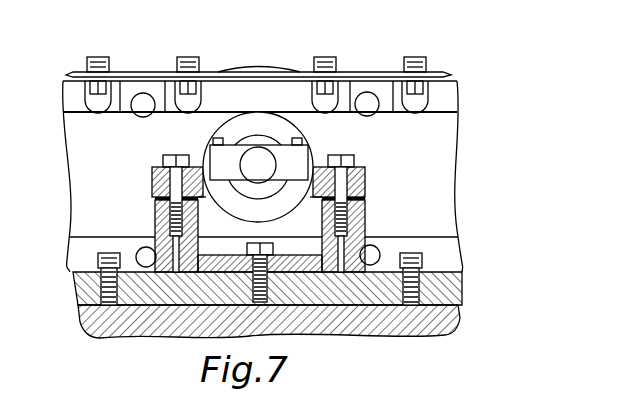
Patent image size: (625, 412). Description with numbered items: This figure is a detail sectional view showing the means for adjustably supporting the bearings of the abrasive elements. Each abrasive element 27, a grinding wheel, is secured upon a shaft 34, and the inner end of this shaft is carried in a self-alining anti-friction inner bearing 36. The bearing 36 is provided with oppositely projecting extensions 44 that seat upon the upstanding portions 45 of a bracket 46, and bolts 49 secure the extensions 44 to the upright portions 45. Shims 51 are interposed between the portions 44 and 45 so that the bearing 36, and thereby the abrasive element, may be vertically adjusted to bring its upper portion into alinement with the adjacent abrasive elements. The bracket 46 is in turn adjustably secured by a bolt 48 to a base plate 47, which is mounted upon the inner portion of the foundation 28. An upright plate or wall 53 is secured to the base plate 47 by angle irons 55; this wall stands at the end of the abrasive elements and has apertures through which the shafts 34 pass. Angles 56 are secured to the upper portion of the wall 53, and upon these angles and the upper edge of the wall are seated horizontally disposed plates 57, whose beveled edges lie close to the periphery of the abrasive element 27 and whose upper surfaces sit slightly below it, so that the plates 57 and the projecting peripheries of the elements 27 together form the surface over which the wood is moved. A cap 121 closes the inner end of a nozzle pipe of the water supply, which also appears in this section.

The abrasive element 27 is at (266, 69).
The foundation 28 is at (460, 327).
The shaft 34 is at (261, 160).
The inner bearing 36 is at (300, 141).
The extensions 44 is at (152, 176).
The upstanding portions 45 is at (155, 216).
The bracket 46 is at (228, 251).
The base plate 47 is at (462, 290).
The bolt 48 is at (255, 297).
The bolts 49 is at (167, 155).
The shims 51 is at (155, 200).
The upright wall 53 is at (453, 152).
The angle irons 55 is at (83, 255).
The angles 56 is at (225, 90).
The plates 57 is at (127, 72).
The cap 121 is at (141, 100).